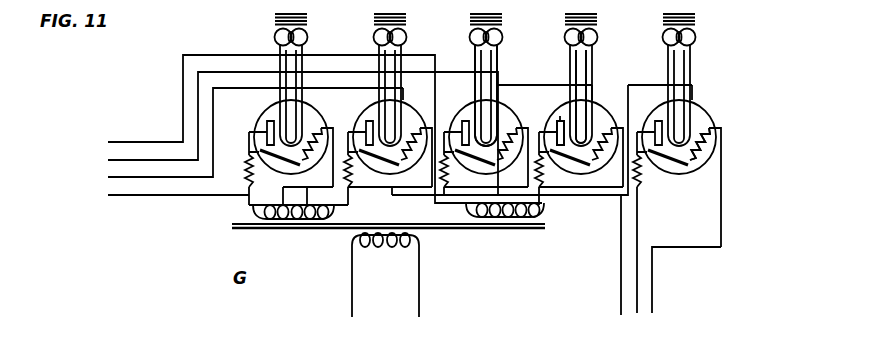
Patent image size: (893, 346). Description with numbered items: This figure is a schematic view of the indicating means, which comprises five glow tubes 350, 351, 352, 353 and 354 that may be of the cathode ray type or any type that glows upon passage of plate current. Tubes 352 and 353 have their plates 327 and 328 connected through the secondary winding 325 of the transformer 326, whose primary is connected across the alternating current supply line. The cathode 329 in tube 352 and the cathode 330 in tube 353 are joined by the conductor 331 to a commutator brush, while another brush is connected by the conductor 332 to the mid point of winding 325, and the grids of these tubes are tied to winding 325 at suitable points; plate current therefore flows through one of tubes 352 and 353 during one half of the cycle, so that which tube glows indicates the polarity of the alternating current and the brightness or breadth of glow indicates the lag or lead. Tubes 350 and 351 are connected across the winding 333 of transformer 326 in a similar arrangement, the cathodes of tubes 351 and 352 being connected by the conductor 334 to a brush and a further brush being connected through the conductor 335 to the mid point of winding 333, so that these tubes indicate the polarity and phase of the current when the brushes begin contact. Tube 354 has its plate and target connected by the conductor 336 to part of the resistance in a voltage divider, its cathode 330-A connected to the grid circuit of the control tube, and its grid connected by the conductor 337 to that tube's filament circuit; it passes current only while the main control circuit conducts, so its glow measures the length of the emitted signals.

The secondary winding 325 is at (545, 213).
The transformer 326 is at (546, 228).
The plate 327 is at (470, 113).
The plate 328 is at (560, 117).
The cathode 329 is at (555, 123).
The cathode 330 is at (594, 128).
The cathode 330-A is at (712, 130).
The conductor 331 is at (110, 159).
The conductor 332 is at (120, 140).
The winding 333 is at (248, 210).
The conductor 334 is at (108, 177).
The conductor 335 is at (122, 196).
The conductor 336 is at (639, 305).
The conductor 337 is at (652, 300).
The tube 350 is at (271, 110).
The tube 351 is at (369, 112).
The tube 352 is at (504, 98).
The tube 353 is at (596, 103).
The tube 354 is at (704, 116).